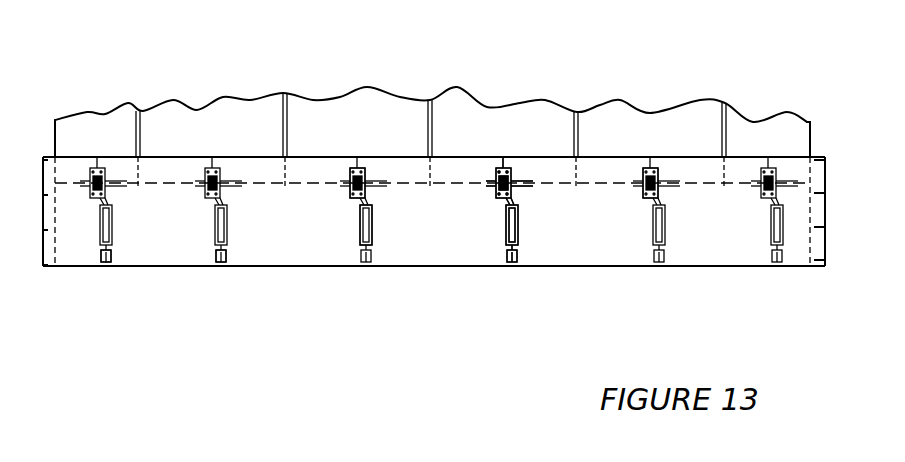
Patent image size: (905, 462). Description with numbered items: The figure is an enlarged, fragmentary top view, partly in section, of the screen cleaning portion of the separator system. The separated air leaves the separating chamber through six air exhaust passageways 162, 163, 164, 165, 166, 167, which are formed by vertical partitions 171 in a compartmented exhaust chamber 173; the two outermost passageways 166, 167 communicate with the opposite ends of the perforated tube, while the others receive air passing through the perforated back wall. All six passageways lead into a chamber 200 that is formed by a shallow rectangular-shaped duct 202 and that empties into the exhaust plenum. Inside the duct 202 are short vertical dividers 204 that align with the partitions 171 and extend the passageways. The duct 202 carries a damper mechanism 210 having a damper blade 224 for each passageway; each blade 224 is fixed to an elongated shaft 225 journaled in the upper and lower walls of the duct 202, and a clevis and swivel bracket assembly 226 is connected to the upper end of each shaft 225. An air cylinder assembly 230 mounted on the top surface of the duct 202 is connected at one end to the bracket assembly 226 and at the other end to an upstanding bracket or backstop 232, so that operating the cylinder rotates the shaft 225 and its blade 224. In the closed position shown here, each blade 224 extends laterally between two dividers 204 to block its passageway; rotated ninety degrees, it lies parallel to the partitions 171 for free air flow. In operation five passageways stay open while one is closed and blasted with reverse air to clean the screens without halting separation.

The air exhaust passageway 162 is at (670, 152).
The air exhaust passageway 163 is at (523, 152).
The air exhaust passageway 164 is at (377, 152).
The air exhaust passageway 165 is at (232, 152).
The outermost air exhaust passageway 166 is at (788, 152).
The outermost air exhaust passageway 167 is at (117, 152).
The vertical partition 171 is at (140, 136).
The exhaust chamber 173 is at (90, 108).
The chamber 200 is at (577, 232).
The shallow rectangular-shaped duct 202 is at (818, 212).
The short vertical divider 204 is at (293, 185).
The damper mechanism 210 is at (484, 206).
The damper blade 224 is at (183, 188).
The elongated shaft 225 is at (362, 180).
The clevis and swivel bracket assembly 226 is at (660, 182).
The air cylinder assembly 230 is at (377, 244).
The upstanding bracket or backstop 232 is at (102, 262).